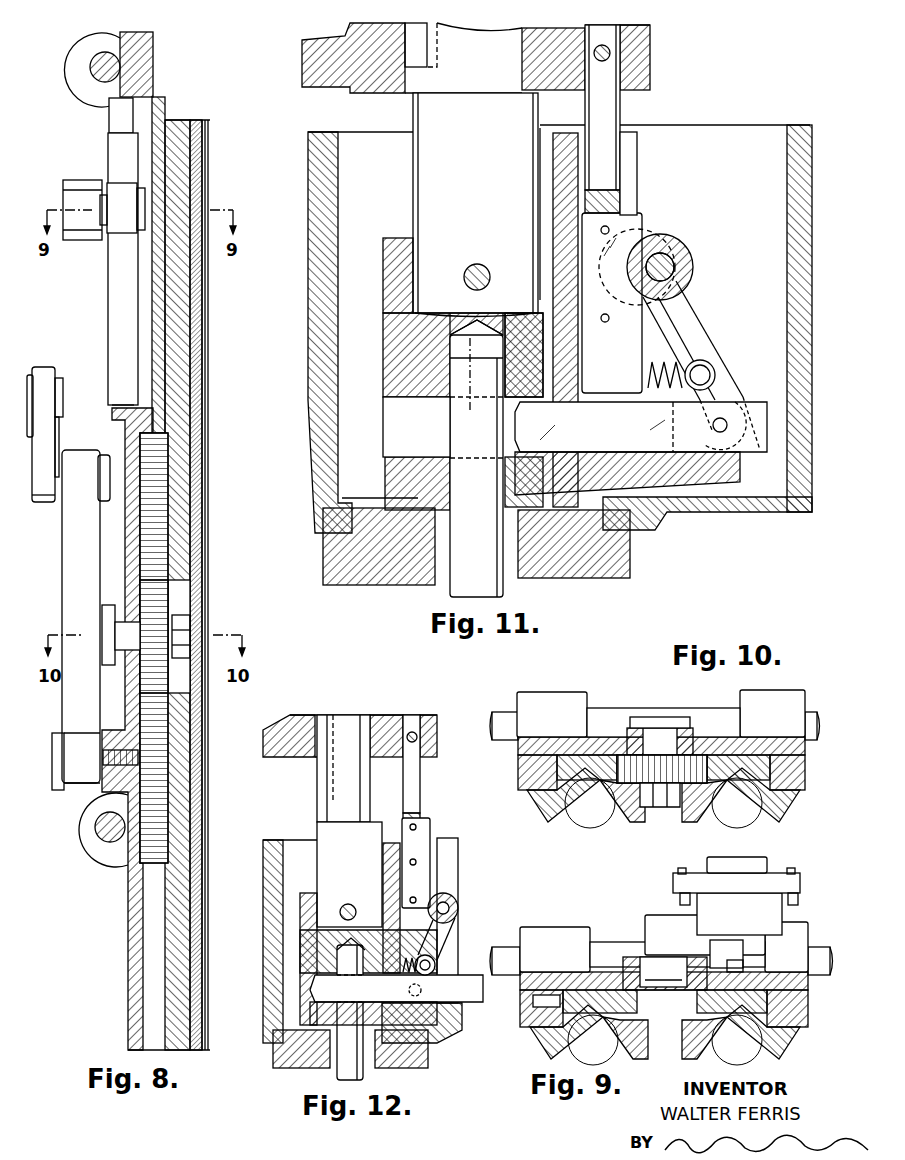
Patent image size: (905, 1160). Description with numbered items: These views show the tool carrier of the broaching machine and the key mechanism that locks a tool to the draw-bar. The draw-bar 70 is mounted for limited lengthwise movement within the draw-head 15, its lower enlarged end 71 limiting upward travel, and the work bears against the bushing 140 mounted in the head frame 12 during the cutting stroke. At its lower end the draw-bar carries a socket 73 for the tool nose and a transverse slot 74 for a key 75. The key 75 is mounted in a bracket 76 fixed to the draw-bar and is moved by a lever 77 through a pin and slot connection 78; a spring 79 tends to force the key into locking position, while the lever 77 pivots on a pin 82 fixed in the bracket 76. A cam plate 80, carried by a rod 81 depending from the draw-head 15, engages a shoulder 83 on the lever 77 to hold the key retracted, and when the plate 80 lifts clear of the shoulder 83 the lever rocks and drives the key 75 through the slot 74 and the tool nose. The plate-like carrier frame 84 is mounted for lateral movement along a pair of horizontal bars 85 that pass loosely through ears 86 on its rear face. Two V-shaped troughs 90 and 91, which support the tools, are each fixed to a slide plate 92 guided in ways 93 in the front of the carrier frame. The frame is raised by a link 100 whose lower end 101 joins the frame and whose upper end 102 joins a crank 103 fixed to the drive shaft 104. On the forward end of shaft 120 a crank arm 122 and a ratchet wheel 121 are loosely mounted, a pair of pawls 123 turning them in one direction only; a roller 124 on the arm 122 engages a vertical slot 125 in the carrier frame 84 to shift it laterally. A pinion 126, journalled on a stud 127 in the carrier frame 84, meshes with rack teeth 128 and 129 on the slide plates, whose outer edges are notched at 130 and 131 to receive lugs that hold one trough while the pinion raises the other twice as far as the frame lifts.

In FIG. 11, the head frame 12 is at (768, 513).
In FIG. 12, the head frame 12 is at (445, 1033).
In FIG. 11, the draw-head 15 is at (650, 52).
In FIG. 12, the draw-head 15 is at (444, 742).
In FIG. 11, the draw-bar 70 is at (473, 86).
In FIG. 12, the draw-bar 70 is at (335, 808).
In FIG. 11, the lower enlarged end 71 is at (420, 175).
In FIG. 12, the lower enlarged end 71 is at (327, 862).
In FIG. 11, the socket 73 is at (490, 332).
In FIG. 12, the socket 73 is at (346, 940).
In FIG. 11, the transverse slot 74 is at (428, 416).
In FIG. 12, the transverse slot 74 is at (322, 980).
In FIG. 11, the key 75 is at (768, 384).
In FIG. 12, the key 75 is at (436, 992).
In FIG. 11, the bracket 76 is at (553, 220).
In FIG. 12, the bracket 76 is at (398, 868).
In FIG. 11, the lever 77 is at (708, 327).
In FIG. 12, the lever 77 is at (436, 965).
In FIG. 11, the pin and slot connection 78 is at (745, 457).
In FIG. 12, the pin and slot connection 78 is at (409, 990).
In FIG. 11, the spring 79 is at (665, 362).
In FIG. 12, the spring 79 is at (410, 950).
In FIG. 11, the cam plate 80 is at (650, 220).
In FIG. 12, the cam plate 80 is at (430, 870).
In FIG. 11, the rod 81 is at (620, 104).
In FIG. 12, the rod 81 is at (420, 786).
In FIG. 11, the pin 82 is at (665, 265).
In FIG. 12, the pin 82 is at (458, 909).
In FIG. 11, the shoulder 83 is at (650, 276).
In FIG. 12, the shoulder 83 is at (430, 888).
In FIG. 8, the carrier frame 84 is at (138, 908).
In FIG. 10, the carrier frame 84 is at (600, 745).
In FIG. 9, the carrier frame 84 is at (610, 978).
In FIG. 8, the horizontal bars 85 is at (108, 50).
In FIG. 10, the horizontal bars 85 is at (716, 716).
In FIG. 9, the horizontal bars 85 is at (625, 946).
In FIG. 8, the ears 86 is at (74, 80).
In FIG. 10, the ears 86 is at (532, 695).
In FIG. 9, the ears 86 is at (560, 938).
In FIG. 10, the trough 90 is at (584, 806).
In FIG. 9, the trough 90 is at (587, 1040).
In FIG. 8, the trough 91 is at (205, 520).
In FIG. 10, the trough 91 is at (740, 805).
In FIG. 9, the trough 91 is at (742, 1040).
In FIG. 8, the slide plate 92 is at (185, 885).
In FIG. 10, the slide plate 92 is at (527, 772).
In FIG. 9, the slide plate 92 is at (535, 1030).
In FIG. 10, the ways 93 is at (540, 757).
In FIG. 9, the ways 93 is at (545, 992).
In FIG. 8, the link 100 is at (80, 570).
In FIG. 8, the lower end of link 101 is at (78, 790).
In FIG. 8, the upper end of link 102 is at (75, 480).
In FIG. 8, the crank 103 is at (57, 448).
In FIG. 8, the drive shaft 104 is at (60, 410).
In FIG. 9, the shaft 120 is at (745, 858).
In FIG. 9, the ratchet wheel 121 is at (750, 905).
In FIG. 8, the crank arm 122 is at (74, 233).
In FIG. 9, the crank arm 122 is at (768, 925).
In FIG. 9, the pawls 123 is at (680, 898).
In FIG. 8, the roller 124 is at (122, 222).
In FIG. 9, the roller 124 is at (655, 952).
In FIG. 8, the vertical slot 125 is at (118, 300).
In FIG. 9, the vertical slot 125 is at (673, 960).
In FIG. 8, the pinion 126 is at (160, 612).
In FIG. 10, the pinion 126 is at (640, 768).
In FIG. 8, the stud 127 is at (108, 606).
In FIG. 10, the stud 127 is at (660, 716).
In FIG. 10, the rack teeth 128 is at (585, 745).
In FIG. 8, the rack teeth 129 is at (165, 562).
In FIG. 10, the rack teeth 129 is at (700, 742).
In FIG. 9, the notch 130 is at (533, 1001).
In FIG. 9, the notch 131 is at (768, 990).
In FIG. 11, the bushing 140 is at (597, 582).
In FIG. 12, the bushing 140 is at (418, 1066).